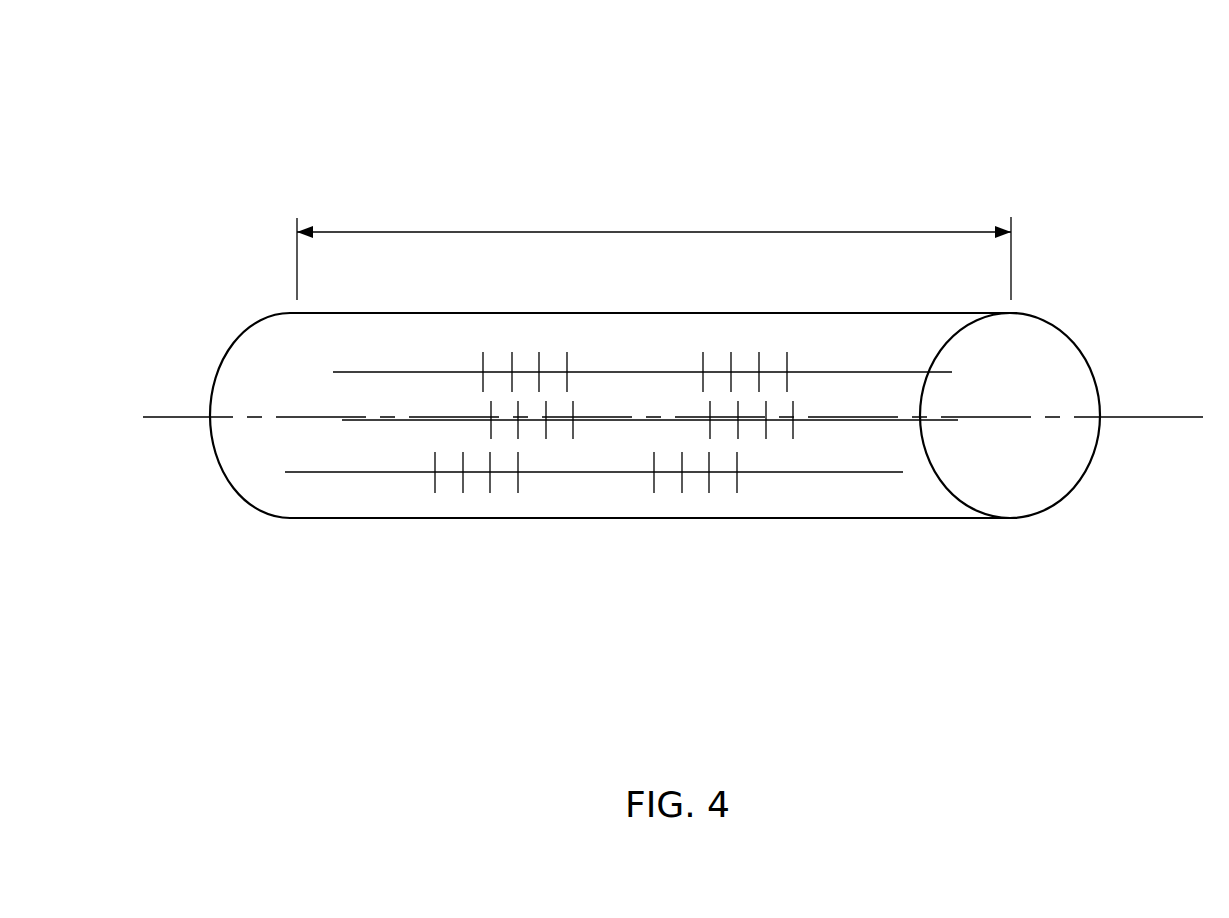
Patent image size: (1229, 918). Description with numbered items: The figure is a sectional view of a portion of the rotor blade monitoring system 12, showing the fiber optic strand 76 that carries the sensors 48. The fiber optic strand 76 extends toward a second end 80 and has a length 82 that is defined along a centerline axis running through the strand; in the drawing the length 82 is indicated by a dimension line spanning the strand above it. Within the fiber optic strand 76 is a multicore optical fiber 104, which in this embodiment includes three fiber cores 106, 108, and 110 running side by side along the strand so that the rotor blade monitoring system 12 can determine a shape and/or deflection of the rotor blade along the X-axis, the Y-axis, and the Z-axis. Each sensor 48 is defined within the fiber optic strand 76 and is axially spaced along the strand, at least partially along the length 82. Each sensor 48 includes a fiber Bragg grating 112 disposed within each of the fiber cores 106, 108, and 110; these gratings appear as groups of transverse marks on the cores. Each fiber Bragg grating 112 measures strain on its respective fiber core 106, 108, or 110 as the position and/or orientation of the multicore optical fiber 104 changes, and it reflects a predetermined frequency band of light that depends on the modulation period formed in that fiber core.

The rotor blade monitoring system 12 is at (947, 128).
The sensor 48 is at (438, 543).
The fiber optic strand 76 is at (710, 152).
The second end 80 is at (1140, 417).
The length 82 is at (460, 232).
The multicore optical fiber 104 is at (555, 518).
The fiber core 106 is at (385, 372).
The fiber core 108 is at (385, 422).
The fiber core 110 is at (350, 472).
The fiber Bragg grating 112 is at (565, 332).